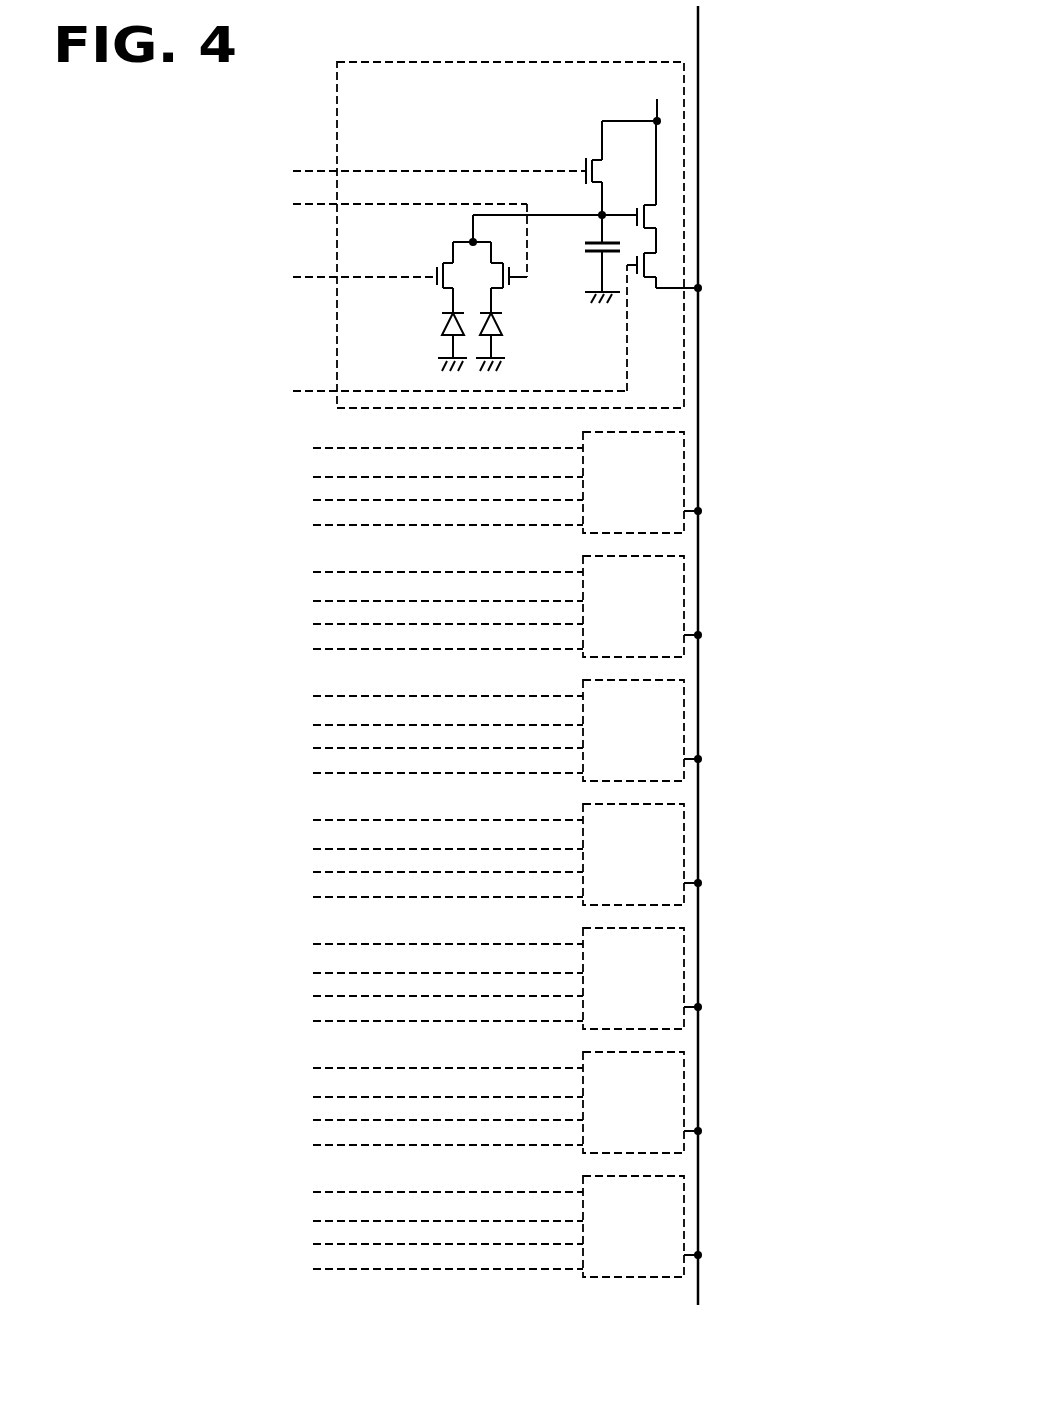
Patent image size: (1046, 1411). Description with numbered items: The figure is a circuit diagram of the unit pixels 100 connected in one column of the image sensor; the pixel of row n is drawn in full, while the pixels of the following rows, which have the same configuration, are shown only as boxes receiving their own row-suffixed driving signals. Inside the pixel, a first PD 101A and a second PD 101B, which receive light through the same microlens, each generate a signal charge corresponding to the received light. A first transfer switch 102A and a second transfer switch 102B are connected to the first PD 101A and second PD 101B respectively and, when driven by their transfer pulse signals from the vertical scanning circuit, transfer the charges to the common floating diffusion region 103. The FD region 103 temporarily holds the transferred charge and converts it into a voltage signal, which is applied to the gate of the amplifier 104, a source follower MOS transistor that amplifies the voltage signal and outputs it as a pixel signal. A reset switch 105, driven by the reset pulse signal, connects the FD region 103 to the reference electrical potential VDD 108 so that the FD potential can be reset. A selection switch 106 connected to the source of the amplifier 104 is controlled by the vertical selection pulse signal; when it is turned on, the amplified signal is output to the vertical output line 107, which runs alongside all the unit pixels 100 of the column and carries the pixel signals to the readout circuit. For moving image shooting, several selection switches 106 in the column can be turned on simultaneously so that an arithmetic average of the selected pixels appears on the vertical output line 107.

The unit pixel 100 is at (357, 63).
The first PD 101A is at (442, 337).
The second PD 101B is at (502, 337).
The first transfer switch 102A is at (437, 287).
The second transfer switch 102B is at (509, 286).
The floating diffusion region 103 is at (585, 251).
The amplifier 104 is at (652, 214).
The reset switch 105 is at (585, 165).
The selection switch 106 is at (652, 266).
The vertical output line 107 is at (698, 88).
The reference electrical potential VDD 108 is at (669, 97).